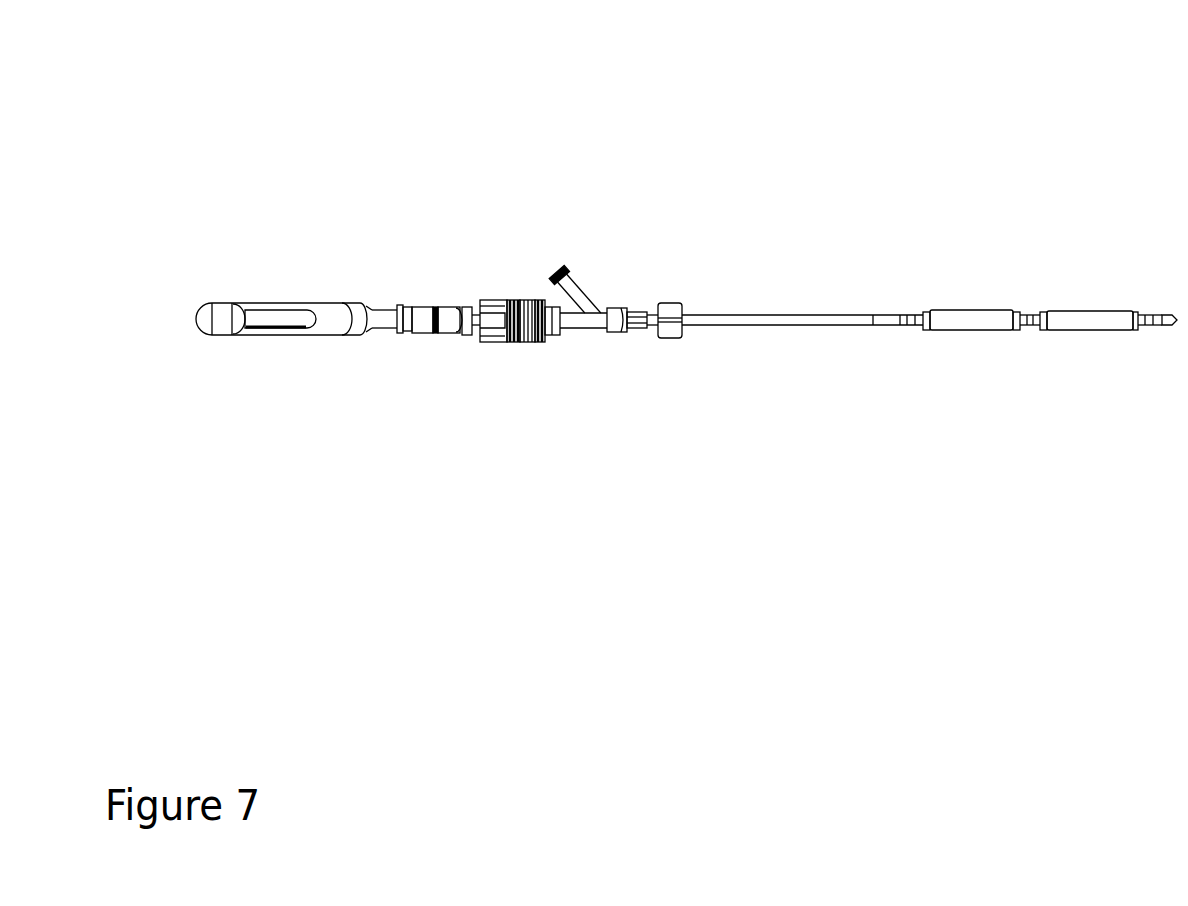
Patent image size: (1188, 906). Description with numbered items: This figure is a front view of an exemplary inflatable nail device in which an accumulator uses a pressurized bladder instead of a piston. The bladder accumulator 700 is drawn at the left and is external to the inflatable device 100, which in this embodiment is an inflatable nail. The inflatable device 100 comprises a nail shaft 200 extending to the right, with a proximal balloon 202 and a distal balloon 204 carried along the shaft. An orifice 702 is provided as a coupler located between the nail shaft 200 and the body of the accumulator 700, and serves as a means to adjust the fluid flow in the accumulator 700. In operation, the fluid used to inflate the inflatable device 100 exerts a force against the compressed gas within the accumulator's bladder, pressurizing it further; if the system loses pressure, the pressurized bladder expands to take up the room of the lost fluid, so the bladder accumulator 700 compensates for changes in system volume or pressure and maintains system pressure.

The inflatable device 100 is at (843, 96).
The bladder accumulator 700 is at (460, 280).
The orifice 702 is at (439, 341).
The nail shaft 200 is at (840, 337).
The proximal balloon 202 is at (973, 299).
The distal balloon 204 is at (1097, 299).